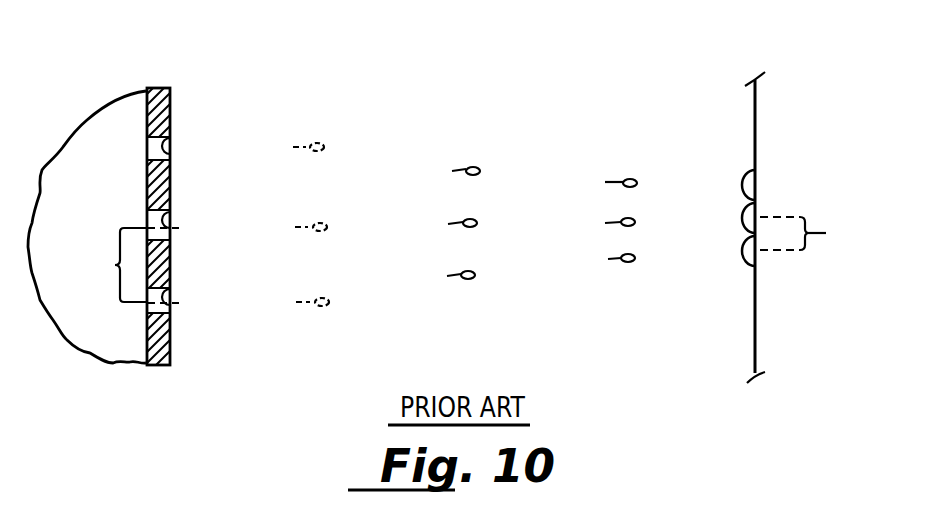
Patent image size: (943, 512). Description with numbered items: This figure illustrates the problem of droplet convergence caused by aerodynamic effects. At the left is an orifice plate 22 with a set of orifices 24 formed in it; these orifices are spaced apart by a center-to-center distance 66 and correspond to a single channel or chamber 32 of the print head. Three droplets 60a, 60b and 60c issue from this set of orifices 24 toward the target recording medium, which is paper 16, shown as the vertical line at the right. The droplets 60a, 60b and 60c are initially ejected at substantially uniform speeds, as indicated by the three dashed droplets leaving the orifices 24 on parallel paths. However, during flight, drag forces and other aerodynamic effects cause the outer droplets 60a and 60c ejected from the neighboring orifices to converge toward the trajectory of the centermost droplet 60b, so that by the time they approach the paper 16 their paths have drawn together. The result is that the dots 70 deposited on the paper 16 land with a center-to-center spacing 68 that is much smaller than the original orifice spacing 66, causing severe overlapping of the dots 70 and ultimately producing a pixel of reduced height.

The paper 16 is at (756, 178).
The orifice plate 22 is at (155, 92).
The orifices 24 is at (172, 148).
The channel or chamber 32 is at (100, 203).
The droplet 60a is at (322, 140).
The centermost droplet 60b is at (324, 220).
The droplet 60c is at (326, 296).
The center-to-center distance 66 is at (113, 265).
The center-to-center spacing 68 is at (806, 234).
The dots 70 is at (744, 186).